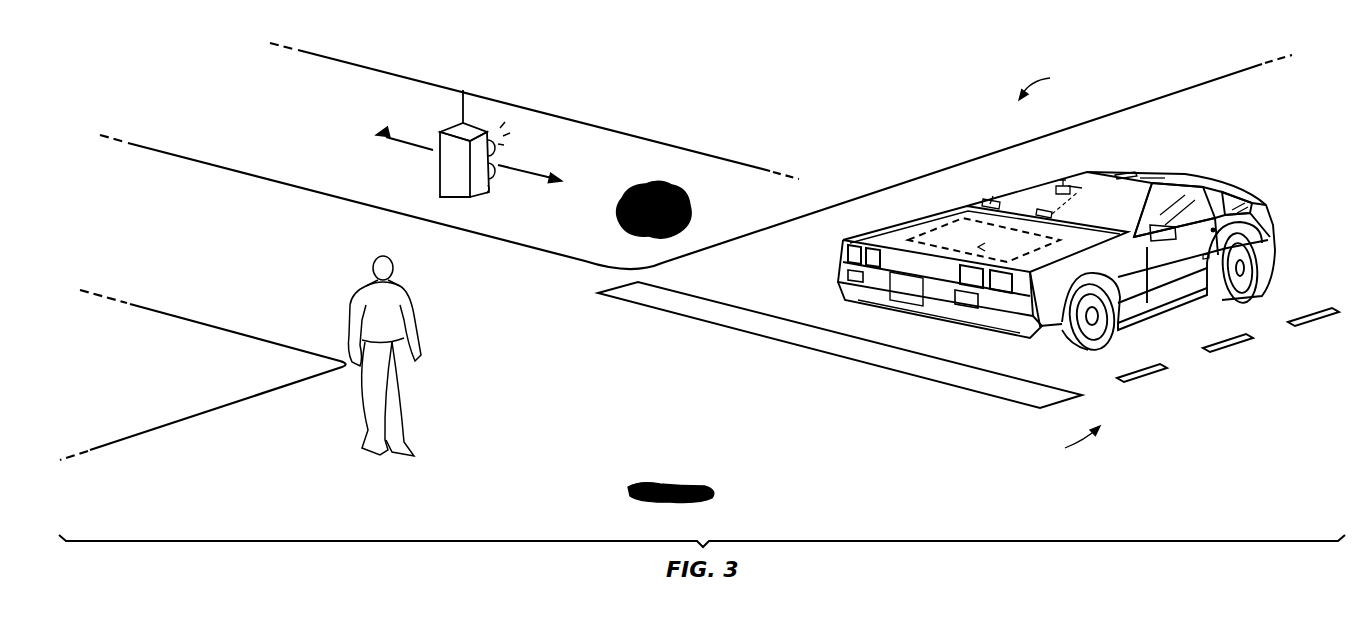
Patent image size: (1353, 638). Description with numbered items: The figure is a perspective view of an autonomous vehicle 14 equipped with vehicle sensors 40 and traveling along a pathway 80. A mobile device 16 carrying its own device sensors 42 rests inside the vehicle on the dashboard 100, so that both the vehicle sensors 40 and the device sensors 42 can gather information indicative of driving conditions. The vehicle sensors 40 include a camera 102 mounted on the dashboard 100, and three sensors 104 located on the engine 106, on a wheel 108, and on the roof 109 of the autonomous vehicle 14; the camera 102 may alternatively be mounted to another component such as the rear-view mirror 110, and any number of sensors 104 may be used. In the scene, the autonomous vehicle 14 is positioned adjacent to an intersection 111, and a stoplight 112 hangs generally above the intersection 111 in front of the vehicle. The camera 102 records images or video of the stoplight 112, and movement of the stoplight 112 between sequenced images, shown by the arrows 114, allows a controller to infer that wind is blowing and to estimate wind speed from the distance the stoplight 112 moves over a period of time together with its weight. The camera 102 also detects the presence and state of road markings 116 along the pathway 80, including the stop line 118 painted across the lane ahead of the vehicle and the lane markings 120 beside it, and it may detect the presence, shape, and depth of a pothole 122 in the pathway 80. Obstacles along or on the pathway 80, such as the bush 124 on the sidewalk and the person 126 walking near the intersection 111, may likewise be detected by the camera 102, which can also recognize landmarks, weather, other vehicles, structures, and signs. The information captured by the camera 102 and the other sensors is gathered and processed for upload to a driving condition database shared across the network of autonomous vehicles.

The autonomous vehicle 14 is at (1085, 255).
The mobile device 16 is at (1045, 211).
The vehicle sensors 40 is at (1050, 82).
The device sensors 42 is at (1050, 195).
The pathway 80 is at (1176, 92).
The dashboard 100 is at (989, 205).
The camera 102 is at (1000, 201).
The sensors 104 is at (978, 249).
The engine 106 is at (937, 223).
The wheel 108 is at (1074, 342).
The roof 109 is at (1158, 171).
The rear-view mirror 110 is at (1073, 188).
The intersection 111 is at (504, 445).
The stoplight 112 is at (466, 196).
The arrows 114 is at (407, 145).
The road markings 116 is at (1064, 444).
The stop line 118 is at (823, 354).
The lane markings 120 is at (1150, 376).
The pothole 122 is at (686, 482).
The bush 124 is at (646, 184).
The person 126 is at (378, 250).